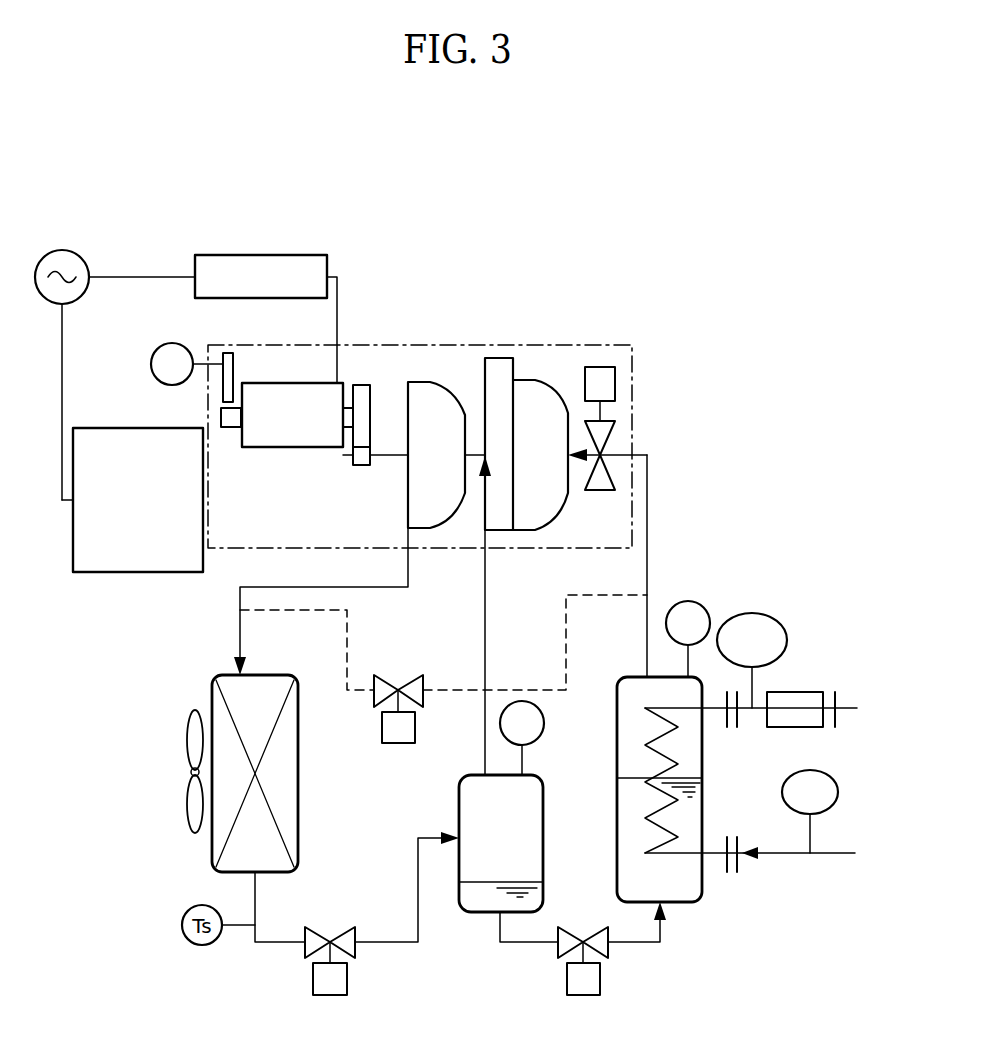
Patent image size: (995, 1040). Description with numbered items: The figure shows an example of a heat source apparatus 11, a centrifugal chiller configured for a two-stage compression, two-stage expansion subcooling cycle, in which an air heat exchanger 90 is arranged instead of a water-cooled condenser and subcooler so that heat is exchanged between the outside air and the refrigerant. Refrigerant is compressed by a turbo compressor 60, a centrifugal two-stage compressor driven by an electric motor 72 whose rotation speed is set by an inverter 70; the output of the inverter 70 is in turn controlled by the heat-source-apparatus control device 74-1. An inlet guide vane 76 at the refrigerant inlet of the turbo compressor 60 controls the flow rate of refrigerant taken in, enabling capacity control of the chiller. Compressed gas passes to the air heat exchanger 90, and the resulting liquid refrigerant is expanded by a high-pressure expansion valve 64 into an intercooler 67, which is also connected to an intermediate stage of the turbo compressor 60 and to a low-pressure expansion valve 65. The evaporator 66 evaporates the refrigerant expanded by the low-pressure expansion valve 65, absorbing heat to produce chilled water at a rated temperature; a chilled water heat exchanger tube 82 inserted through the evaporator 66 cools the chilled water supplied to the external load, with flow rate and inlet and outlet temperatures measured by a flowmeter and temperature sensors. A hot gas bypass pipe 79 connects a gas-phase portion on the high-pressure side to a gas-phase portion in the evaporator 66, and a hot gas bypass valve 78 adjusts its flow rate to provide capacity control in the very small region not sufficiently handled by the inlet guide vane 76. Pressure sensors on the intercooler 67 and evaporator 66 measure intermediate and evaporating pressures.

The heat source apparatus 11 is at (150, 171).
The turbo compressor 60 is at (660, 340).
The inverter 70 is at (258, 255).
The electric motor 72 is at (285, 383).
The heat-source-apparatus control device 74-1 is at (142, 573).
The inlet guide vane 76 is at (602, 493).
The hot gas bypass valve 78 is at (405, 678).
The hot gas bypass pipe 79 is at (540, 687).
The air heat exchanger 90 is at (298, 788).
The intercooler 67 is at (543, 827).
The high-pressure expansion valve 64 is at (355, 950).
The low-pressure expansion valve 65 is at (608, 950).
The evaporator 66 is at (632, 675).
The chilled water heat exchanger tube 82 is at (650, 742).